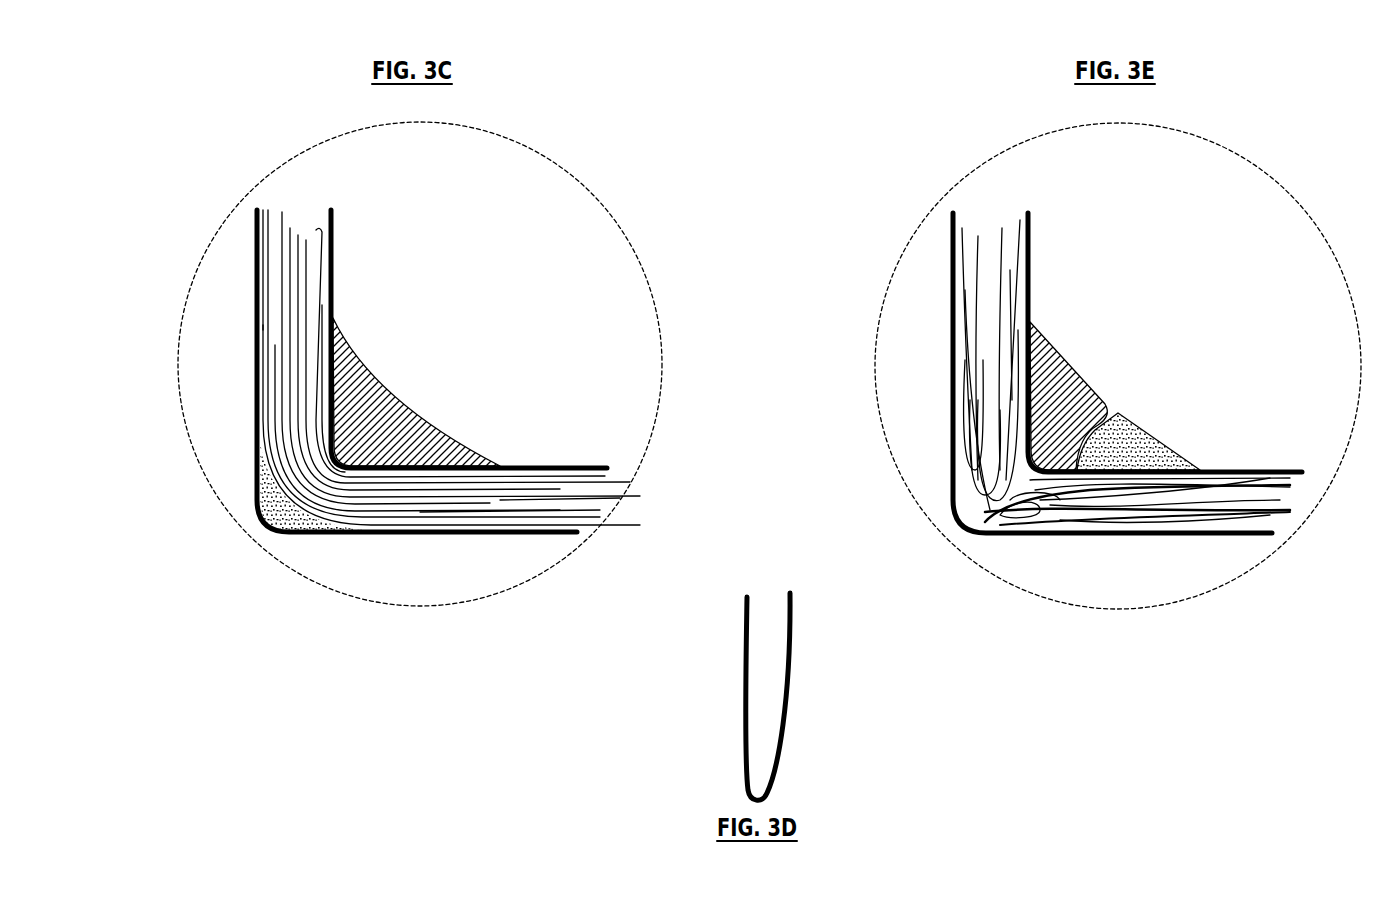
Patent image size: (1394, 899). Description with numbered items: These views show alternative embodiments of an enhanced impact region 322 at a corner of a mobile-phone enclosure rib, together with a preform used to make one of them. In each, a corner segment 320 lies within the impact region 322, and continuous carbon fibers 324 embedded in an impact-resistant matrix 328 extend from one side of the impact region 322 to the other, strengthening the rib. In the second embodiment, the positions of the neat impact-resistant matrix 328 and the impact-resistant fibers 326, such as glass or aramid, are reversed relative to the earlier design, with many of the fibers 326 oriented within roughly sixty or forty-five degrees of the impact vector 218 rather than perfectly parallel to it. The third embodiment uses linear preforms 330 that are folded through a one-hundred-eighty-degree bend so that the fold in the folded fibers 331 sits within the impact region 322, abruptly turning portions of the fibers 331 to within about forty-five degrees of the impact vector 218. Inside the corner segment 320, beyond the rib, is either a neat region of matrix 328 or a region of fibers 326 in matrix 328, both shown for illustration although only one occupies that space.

In FIG. 3C, the impact vector 218 is at (262, 524).
In FIG. 3E, the impact vector 218 is at (960, 526).
In FIG. 3C, the corner segment 320 is at (291, 534).
In FIG. 3E, the corner segment 320 is at (990, 537).
In FIG. 3C, the impact region 322 is at (588, 192).
In FIG. 3E, the impact region 322 is at (1283, 192).
In FIG. 3C, the continuous carbon fibers 324 is at (290, 383).
In FIG. 3C, the impact-resistant fibers 326 is at (408, 400).
In FIG. 3E, the impact-resistant fibers 326 is at (1066, 372).
In FIG. 3C, the impact-resistant matrix 328 is at (275, 328).
In FIG. 3E, the impact-resistant matrix 328 is at (1077, 382).
In FIG. 3D, the linear preforms 330 is at (812, 691).
In FIG. 3E, the folded fibers 331 is at (958, 502).